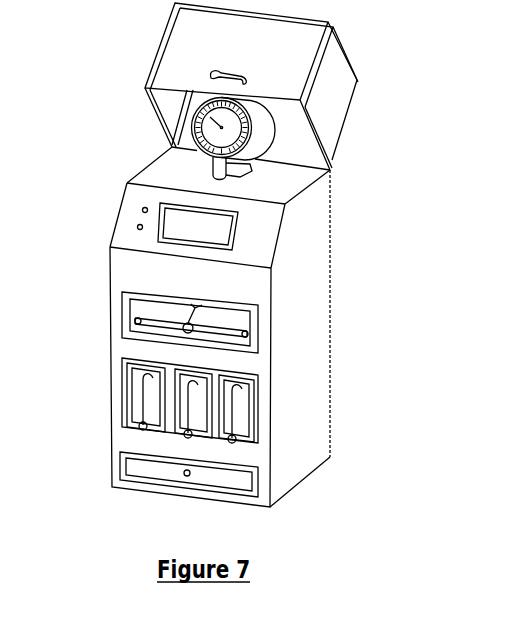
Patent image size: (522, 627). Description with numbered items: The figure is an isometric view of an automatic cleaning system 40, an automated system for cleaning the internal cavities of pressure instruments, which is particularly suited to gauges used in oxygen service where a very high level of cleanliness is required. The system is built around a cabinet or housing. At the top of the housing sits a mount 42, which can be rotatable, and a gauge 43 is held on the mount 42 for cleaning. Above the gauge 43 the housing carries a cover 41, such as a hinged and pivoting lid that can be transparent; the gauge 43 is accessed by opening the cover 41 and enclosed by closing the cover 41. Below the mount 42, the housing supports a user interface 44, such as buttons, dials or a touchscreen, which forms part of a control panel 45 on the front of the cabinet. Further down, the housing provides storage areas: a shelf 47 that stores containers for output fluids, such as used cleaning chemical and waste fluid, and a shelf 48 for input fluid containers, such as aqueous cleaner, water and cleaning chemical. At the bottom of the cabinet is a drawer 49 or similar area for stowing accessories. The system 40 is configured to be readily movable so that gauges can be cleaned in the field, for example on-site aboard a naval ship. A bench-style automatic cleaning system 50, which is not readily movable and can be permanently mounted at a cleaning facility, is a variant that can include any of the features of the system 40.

The automatic cleaning system 40 is at (360, 120).
The cover 41 is at (263, 62).
The mount 42 is at (275, 131).
The gauge 43 is at (192, 122).
The user interface 44 is at (236, 231).
The control panel 45 is at (133, 227).
The shelf 47 is at (137, 308).
The shelf 48 is at (130, 379).
The drawer 49 is at (137, 453).
The automatic cleaning system 50 is at (226, 166).